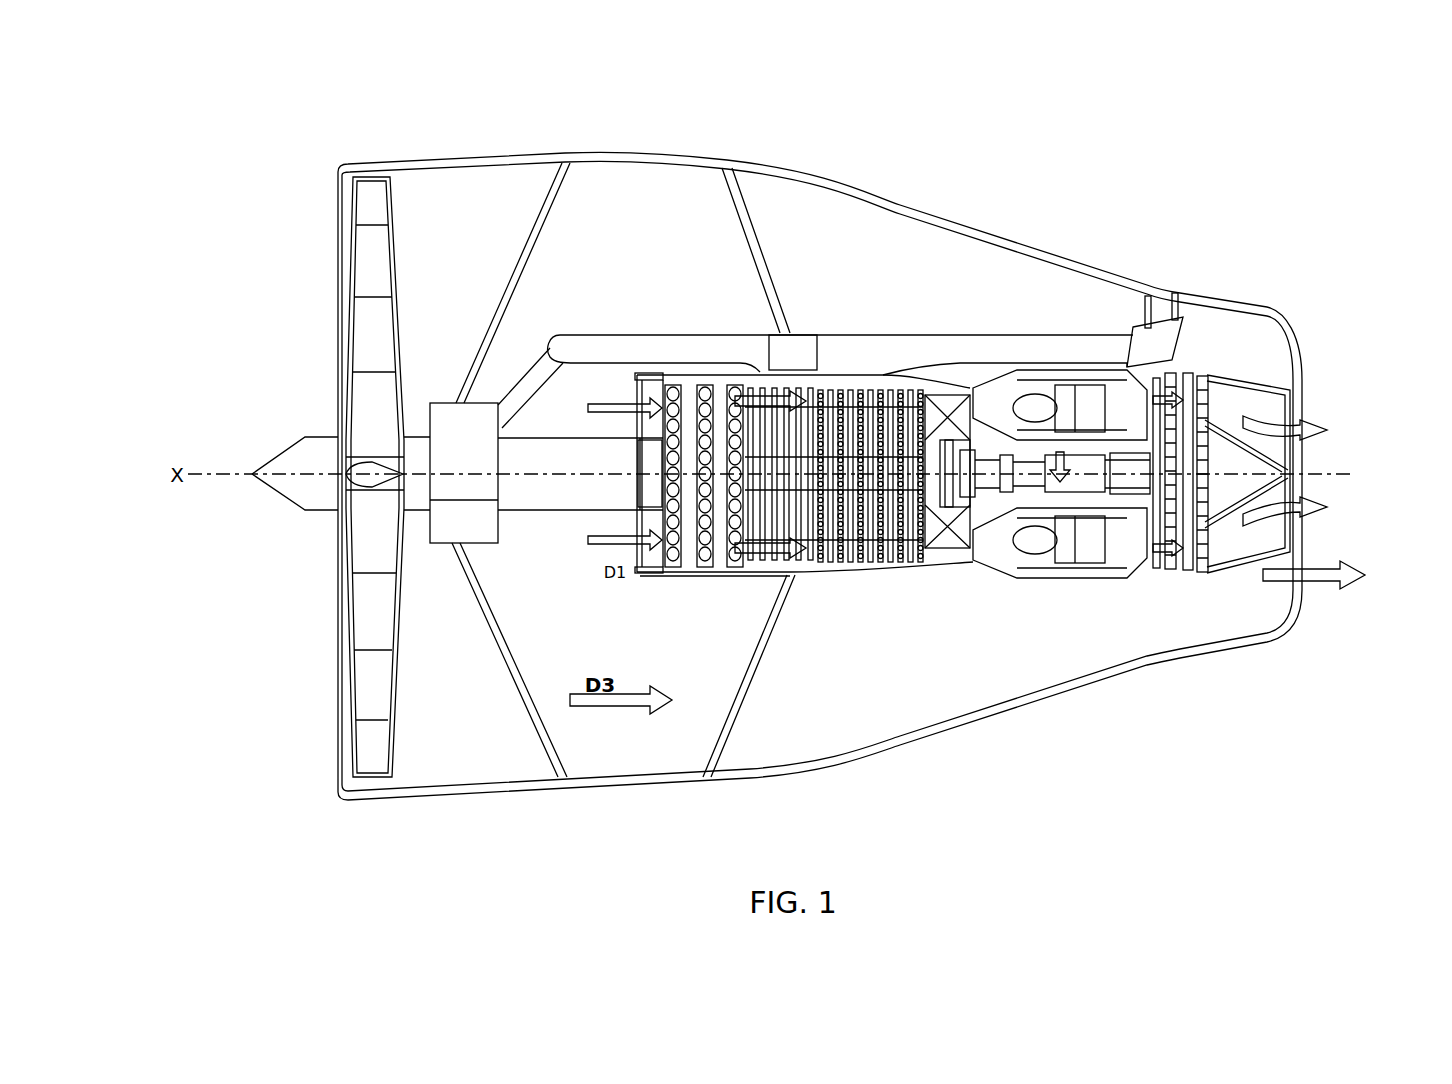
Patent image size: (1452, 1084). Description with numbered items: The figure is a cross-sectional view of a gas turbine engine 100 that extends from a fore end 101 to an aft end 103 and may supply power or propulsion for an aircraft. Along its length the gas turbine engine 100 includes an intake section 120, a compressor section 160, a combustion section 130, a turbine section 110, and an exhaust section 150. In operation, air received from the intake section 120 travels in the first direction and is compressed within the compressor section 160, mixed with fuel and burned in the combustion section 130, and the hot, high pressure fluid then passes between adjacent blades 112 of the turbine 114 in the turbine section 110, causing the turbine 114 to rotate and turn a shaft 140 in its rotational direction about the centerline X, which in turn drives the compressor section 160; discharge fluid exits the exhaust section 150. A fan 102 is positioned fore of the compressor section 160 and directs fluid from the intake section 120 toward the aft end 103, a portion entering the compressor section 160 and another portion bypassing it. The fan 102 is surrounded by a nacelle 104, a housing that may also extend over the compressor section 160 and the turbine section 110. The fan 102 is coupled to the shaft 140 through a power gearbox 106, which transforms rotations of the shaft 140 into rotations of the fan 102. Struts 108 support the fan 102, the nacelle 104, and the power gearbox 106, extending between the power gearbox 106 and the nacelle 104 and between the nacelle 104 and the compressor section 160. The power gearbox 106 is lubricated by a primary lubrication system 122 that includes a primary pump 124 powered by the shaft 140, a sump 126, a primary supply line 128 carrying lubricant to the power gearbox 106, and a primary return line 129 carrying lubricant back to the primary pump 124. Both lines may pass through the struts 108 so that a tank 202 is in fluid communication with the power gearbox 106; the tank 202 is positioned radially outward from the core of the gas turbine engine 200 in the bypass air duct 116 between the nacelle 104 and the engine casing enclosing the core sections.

The gas turbine engine 100 is at (1078, 210).
The fore end 101 is at (271, 532).
The fan 102 is at (377, 182).
The aft end 103 is at (1353, 664).
The nacelle 104 is at (463, 158).
The power gearbox 106 is at (520, 388).
The struts 108 is at (503, 292).
The turbine section 110 is at (1193, 594).
The blades 112 is at (1202, 375).
The turbine 114 is at (1216, 542).
The bypass air duct 116 is at (1068, 310).
The intake section 120 is at (238, 294).
The primary lubrication system 122 is at (848, 312).
The primary pump 124 is at (812, 333).
The sump 126 is at (502, 528).
The primary supply line 128 is at (626, 160).
The primary return line 129 is at (625, 782).
The combustion section 130 is at (1062, 592).
The shaft 140 is at (553, 435).
The exhaust section 150 is at (1355, 400).
The compressor section 160 is at (833, 592).
The gas turbine engine 200 is at (978, 306).
The tank 202 is at (1223, 289).